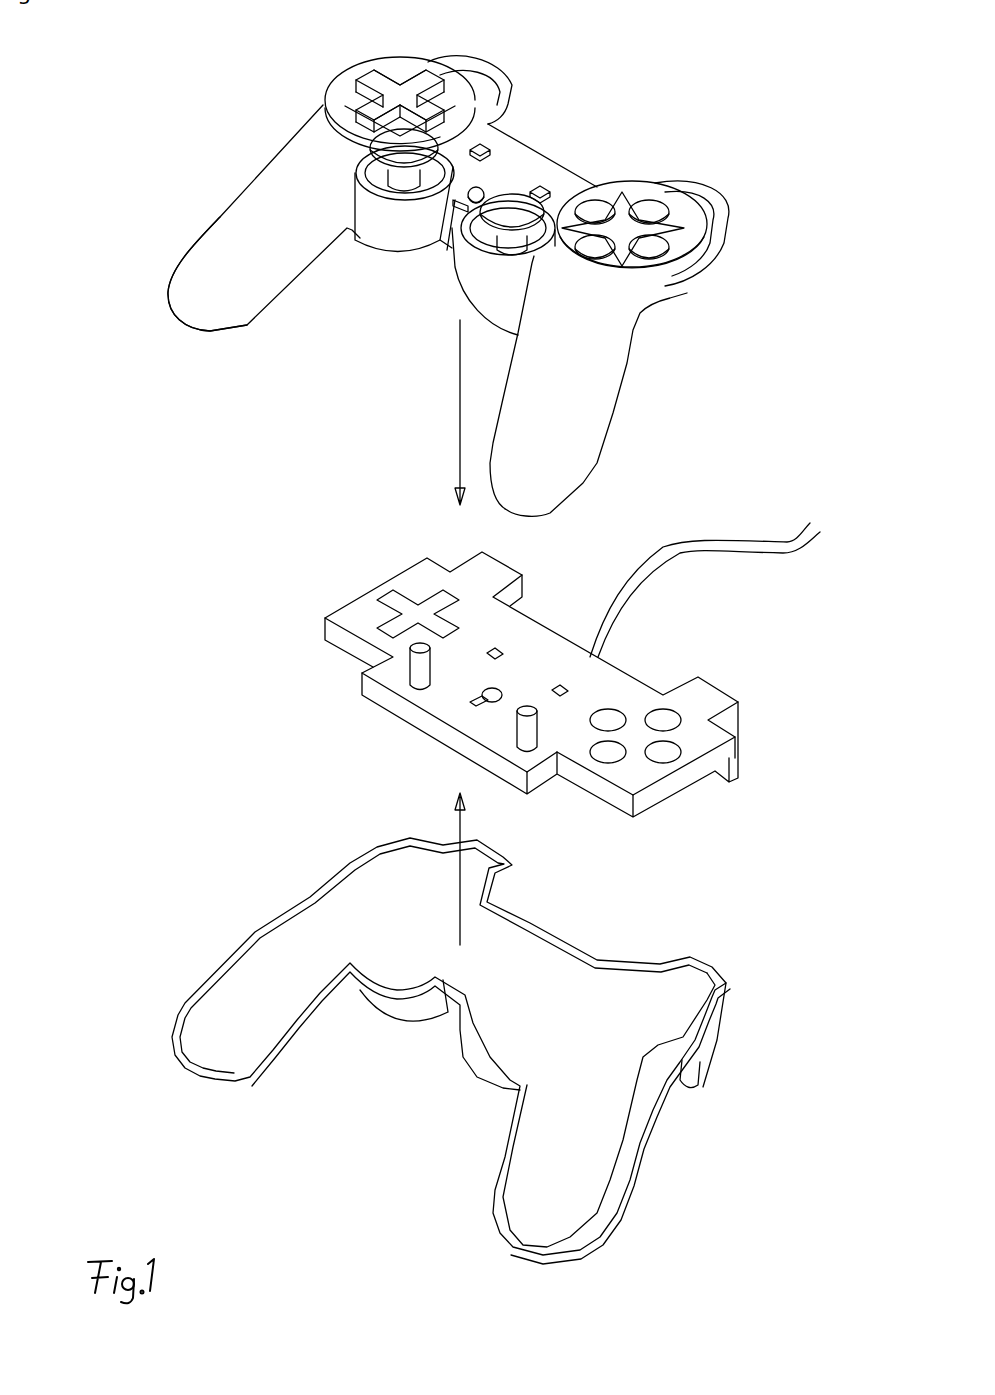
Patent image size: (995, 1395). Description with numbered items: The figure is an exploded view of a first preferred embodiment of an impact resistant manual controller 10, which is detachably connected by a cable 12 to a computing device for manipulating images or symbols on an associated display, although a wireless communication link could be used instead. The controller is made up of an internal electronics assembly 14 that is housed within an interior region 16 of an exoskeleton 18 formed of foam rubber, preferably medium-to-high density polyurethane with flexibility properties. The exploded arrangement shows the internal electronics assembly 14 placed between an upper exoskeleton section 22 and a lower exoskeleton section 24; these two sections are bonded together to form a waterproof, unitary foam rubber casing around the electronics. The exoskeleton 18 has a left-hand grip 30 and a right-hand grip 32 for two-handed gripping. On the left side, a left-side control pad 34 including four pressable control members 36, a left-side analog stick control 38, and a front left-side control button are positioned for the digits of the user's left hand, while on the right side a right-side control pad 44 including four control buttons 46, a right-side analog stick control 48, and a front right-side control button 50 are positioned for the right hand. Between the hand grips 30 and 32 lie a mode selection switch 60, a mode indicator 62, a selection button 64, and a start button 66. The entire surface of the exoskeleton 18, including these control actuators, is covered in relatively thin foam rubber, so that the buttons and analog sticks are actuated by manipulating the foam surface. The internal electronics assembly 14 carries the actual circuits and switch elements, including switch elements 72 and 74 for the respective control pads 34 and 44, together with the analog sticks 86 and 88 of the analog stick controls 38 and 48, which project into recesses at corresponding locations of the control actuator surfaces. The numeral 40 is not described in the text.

The manual controller 10 is at (160, 718).
The cable 12 is at (712, 540).
The internal electronics assembly 14 is at (642, 659).
The interior region 16 is at (507, 967).
The exoskeleton 18 is at (245, 342).
The upper exoskeleton section 22 is at (383, 252).
The lower exoskeleton section 24 is at (393, 1020).
The left-hand grip 30 is at (225, 235).
The right-hand grip 32 is at (597, 415).
The left-side control pad 34 is at (405, 52).
The pressable control members 36 is at (330, 92).
The left-side analog stick control 38 is at (405, 185).
The left shoulder button 40 is at (497, 63).
The right-side control pad 44 is at (685, 244).
The control buttons 46 is at (647, 212).
The right-side analog stick control 48 is at (507, 247).
The front right-side control button 50 is at (720, 192).
The mode selection switch 60 is at (485, 192).
The mode indicator 62 is at (447, 250).
The selection button 64 is at (480, 152).
The start button 66 is at (547, 190).
The switch element 72 is at (392, 582).
The switch element 74 is at (698, 740).
The analog stick 86 is at (415, 673).
The analog stick 88 is at (522, 737).